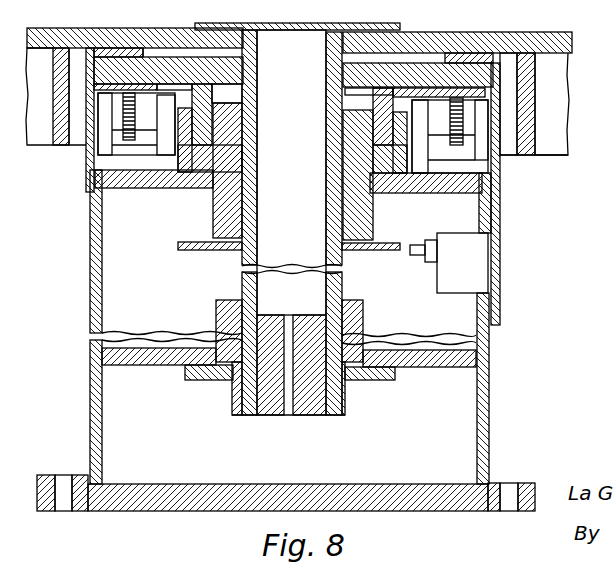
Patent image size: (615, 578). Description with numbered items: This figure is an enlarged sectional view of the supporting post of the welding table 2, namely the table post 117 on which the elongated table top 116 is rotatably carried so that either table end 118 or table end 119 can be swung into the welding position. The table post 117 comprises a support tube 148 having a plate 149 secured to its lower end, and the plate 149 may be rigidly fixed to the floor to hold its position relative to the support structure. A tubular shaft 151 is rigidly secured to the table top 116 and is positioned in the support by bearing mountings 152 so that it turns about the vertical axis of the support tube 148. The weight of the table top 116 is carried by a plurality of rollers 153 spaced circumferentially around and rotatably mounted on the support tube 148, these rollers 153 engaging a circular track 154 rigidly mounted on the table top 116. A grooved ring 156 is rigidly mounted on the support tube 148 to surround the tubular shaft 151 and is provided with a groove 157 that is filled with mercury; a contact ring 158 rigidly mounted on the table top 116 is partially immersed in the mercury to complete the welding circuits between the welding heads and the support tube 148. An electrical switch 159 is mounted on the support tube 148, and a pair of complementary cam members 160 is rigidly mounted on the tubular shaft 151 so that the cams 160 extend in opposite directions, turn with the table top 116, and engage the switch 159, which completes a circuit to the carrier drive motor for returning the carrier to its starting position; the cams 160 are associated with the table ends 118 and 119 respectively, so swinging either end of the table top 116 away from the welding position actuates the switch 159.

The table 2 is at (491, 395).
The table top 116 is at (614, 57).
The table post 117 is at (540, 438).
The table end 118 is at (553, 157).
The table end 119 is at (40, 145).
The support tube 148 is at (485, 337).
The plate 149 is at (459, 511).
The tubular shaft 151 is at (242, 269).
The bearing mountings 152 is at (213, 212).
The rollers 153 is at (132, 142).
The circular track 154 is at (500, 105).
The grooved ring 156 is at (258, 131).
The groove 157 is at (258, 163).
The contact ring 158 is at (258, 101).
The electrical switch 159 is at (482, 258).
The cam members 160 is at (182, 250).